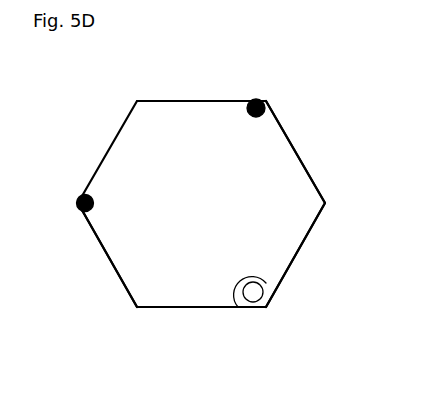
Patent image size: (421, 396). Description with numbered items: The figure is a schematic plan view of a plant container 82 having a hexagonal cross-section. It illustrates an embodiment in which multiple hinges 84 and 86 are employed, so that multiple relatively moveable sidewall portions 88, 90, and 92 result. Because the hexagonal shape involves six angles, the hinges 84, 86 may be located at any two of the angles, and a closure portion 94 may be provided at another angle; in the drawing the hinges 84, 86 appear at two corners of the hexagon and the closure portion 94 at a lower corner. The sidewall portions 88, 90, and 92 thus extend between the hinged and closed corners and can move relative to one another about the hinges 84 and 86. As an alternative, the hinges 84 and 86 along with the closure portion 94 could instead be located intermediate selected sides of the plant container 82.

The plant container 82 is at (209, 211).
The hinge 84 is at (79, 200).
The hinge 86 is at (267, 103).
The sidewall portion 88 is at (129, 318).
The sidewall portion 90 is at (136, 88).
The sidewall portion 92 is at (337, 199).
The closure portion 94 is at (272, 318).